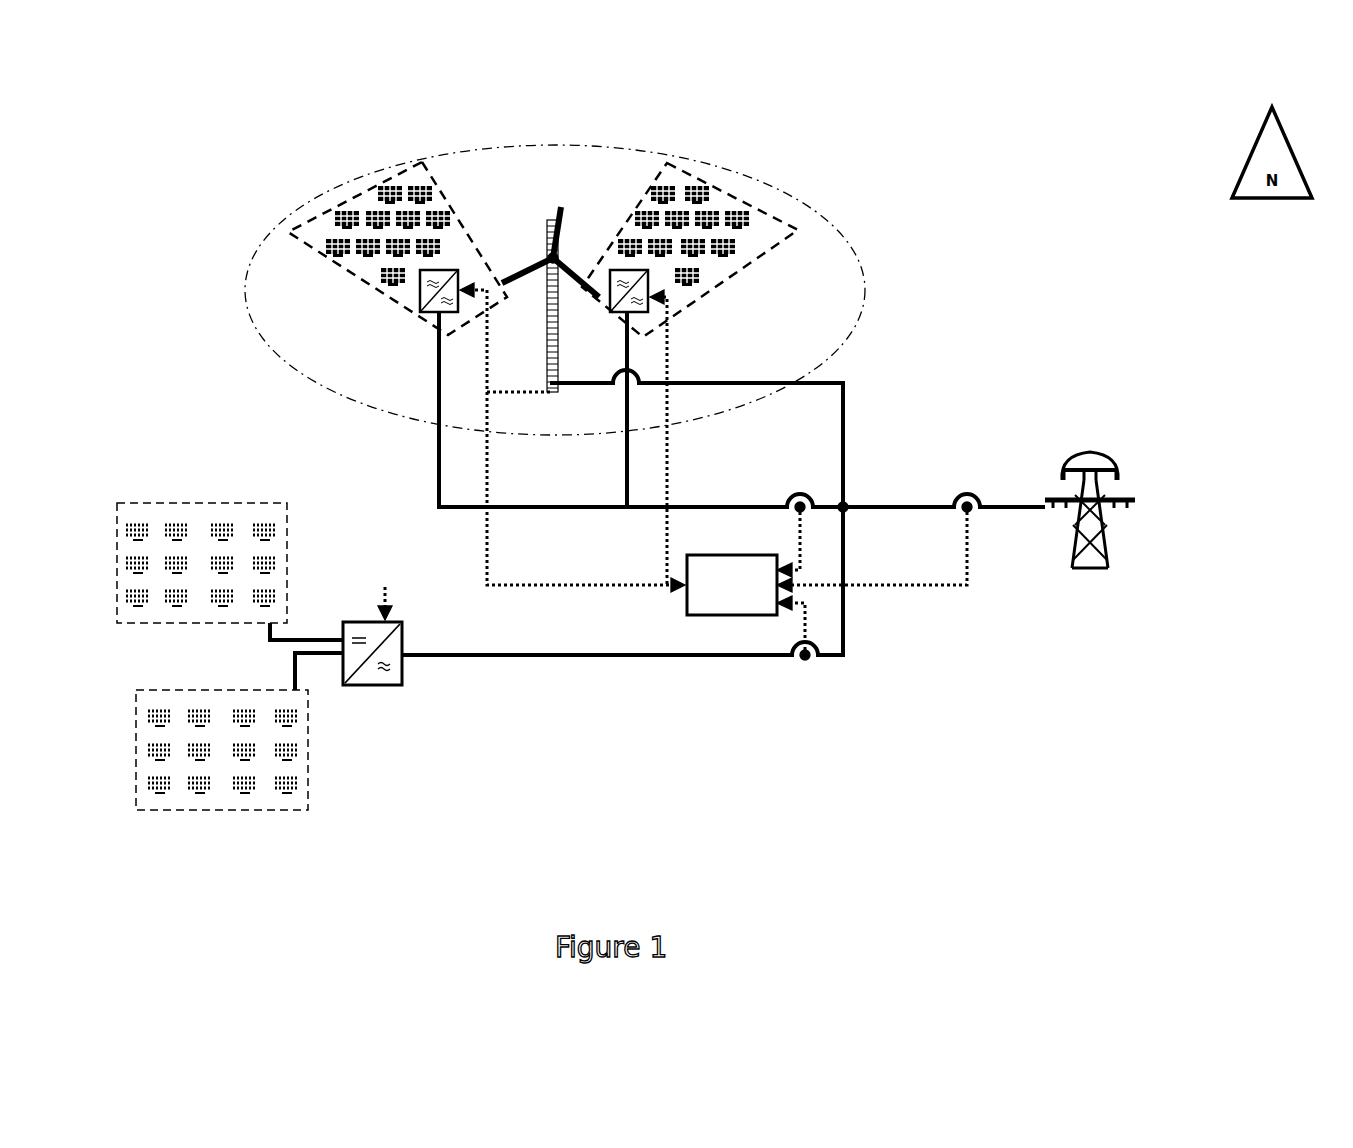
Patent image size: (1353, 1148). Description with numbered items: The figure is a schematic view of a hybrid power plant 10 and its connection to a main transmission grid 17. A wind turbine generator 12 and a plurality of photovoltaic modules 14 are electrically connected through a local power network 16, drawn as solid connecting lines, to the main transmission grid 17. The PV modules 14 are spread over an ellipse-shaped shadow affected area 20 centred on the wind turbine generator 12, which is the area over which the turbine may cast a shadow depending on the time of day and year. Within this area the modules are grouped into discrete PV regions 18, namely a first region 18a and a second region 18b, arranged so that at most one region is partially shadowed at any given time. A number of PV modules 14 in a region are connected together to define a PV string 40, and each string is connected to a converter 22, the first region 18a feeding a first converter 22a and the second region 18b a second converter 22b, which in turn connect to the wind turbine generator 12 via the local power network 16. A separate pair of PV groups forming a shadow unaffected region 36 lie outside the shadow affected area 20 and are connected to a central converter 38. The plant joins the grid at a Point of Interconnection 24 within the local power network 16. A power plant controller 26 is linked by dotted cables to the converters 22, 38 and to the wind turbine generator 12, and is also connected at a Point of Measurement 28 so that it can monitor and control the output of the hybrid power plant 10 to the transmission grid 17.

The hybrid power plant 10 is at (673, 261).
The wind turbine generator 12 is at (545, 248).
The photovoltaic modules 14 is at (610, 201).
The local power network 16 is at (1025, 396).
The main transmission grid 17 is at (1135, 500).
The PV regions 18 is at (517, 201).
The first region 18a is at (320, 248).
The second region 18b is at (722, 202).
The shadow affected area 20 is at (277, 223).
The converter 22 is at (342, 379).
The first converter 22a is at (414, 302).
The second converter 22b is at (650, 306).
The Point of Interconnection 24 is at (843, 510).
The power plant controller 26 is at (732, 615).
The Point of Measurement 28 is at (967, 510).
The shadow unaffected region 36 is at (200, 623).
The central converter 38 is at (357, 630).
The PV string 40 is at (390, 190).